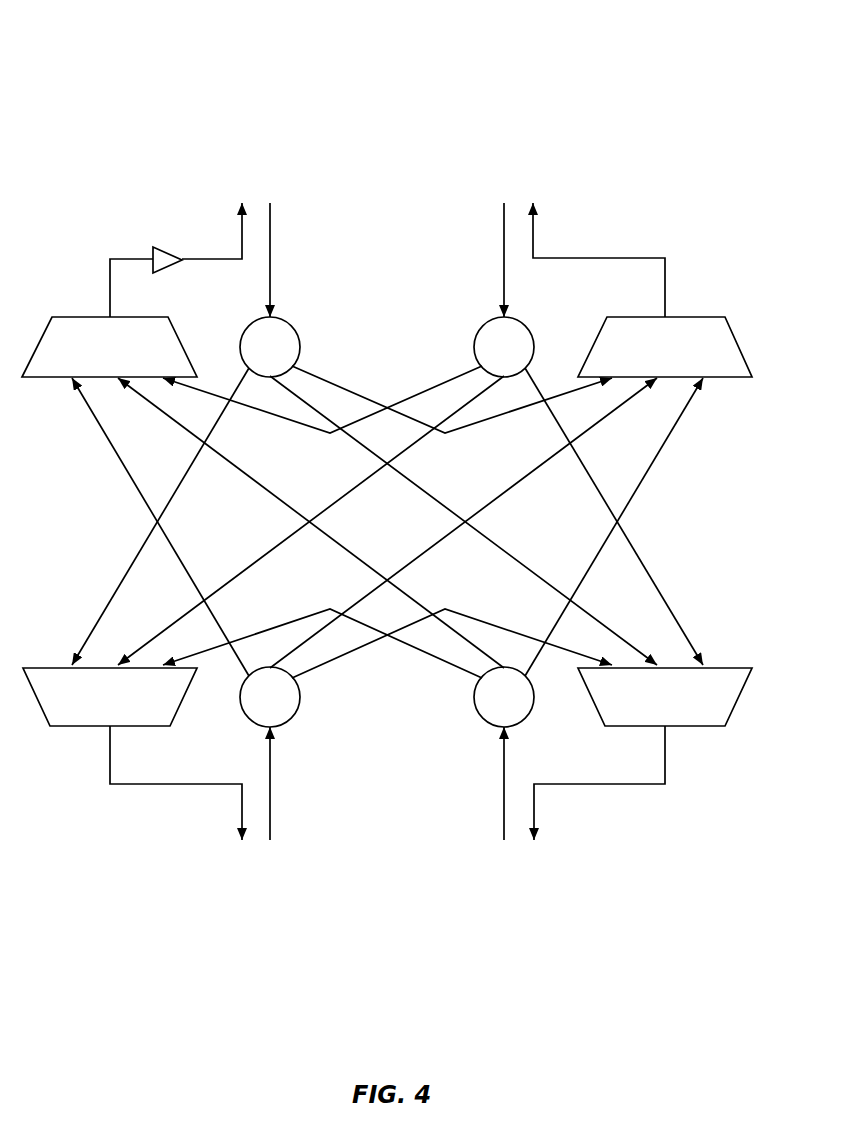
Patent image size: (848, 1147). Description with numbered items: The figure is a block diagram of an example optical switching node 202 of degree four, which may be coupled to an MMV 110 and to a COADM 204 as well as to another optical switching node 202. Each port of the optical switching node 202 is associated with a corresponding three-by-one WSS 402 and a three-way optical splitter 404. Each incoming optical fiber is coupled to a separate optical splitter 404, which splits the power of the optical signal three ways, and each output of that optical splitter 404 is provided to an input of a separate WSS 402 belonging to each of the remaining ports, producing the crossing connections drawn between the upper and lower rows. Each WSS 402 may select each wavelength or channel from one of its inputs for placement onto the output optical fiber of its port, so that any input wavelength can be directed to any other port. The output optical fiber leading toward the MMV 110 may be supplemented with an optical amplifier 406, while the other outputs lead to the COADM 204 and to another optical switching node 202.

The optical switching node 202 is at (72, 146).
The 3×1 WSS 402 is at (96, 365).
The optical splitter 404 is at (256, 365).
The optical amplifier 406 is at (166, 250).
The MMV 110 is at (193, 239).
The COADM 204 is at (387, 804).